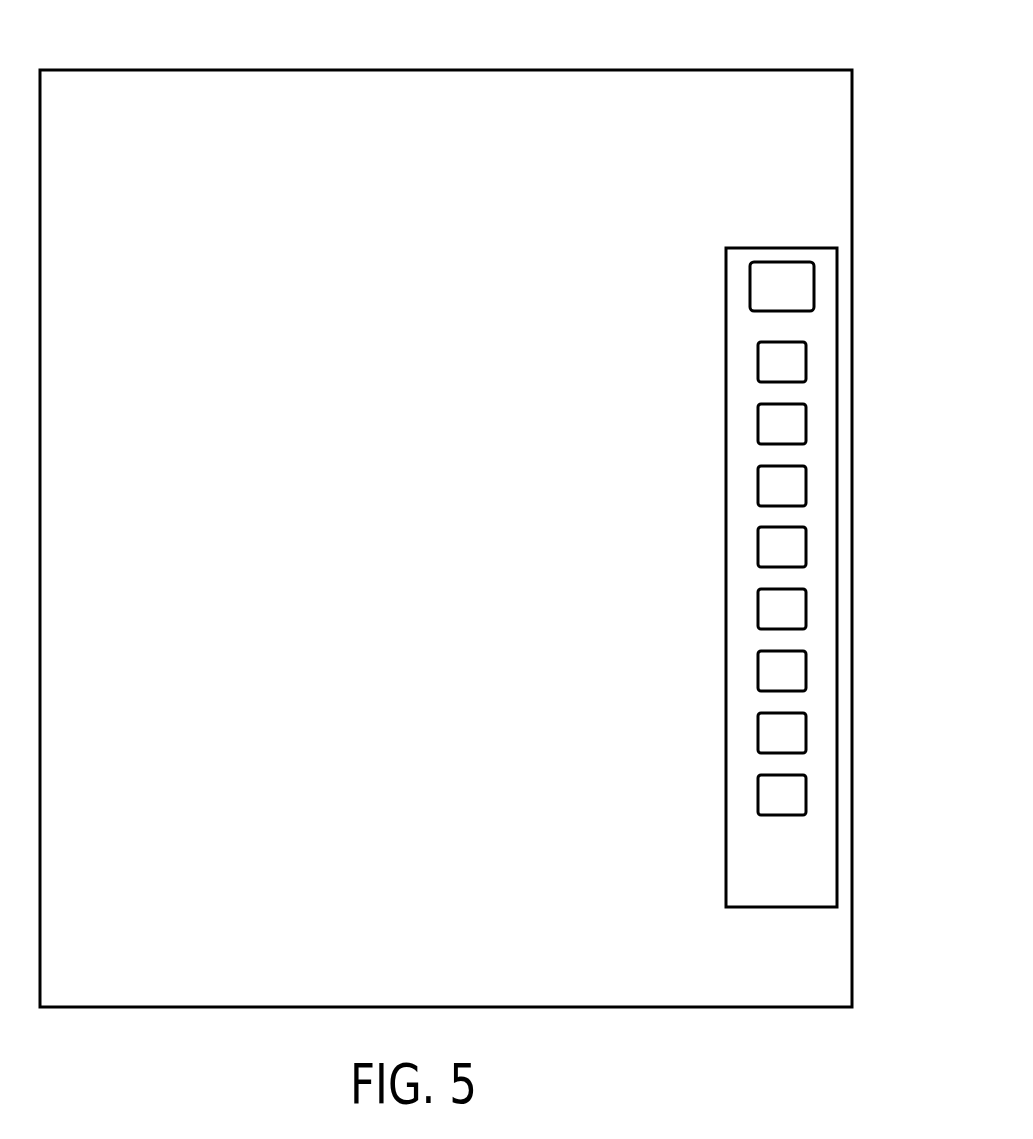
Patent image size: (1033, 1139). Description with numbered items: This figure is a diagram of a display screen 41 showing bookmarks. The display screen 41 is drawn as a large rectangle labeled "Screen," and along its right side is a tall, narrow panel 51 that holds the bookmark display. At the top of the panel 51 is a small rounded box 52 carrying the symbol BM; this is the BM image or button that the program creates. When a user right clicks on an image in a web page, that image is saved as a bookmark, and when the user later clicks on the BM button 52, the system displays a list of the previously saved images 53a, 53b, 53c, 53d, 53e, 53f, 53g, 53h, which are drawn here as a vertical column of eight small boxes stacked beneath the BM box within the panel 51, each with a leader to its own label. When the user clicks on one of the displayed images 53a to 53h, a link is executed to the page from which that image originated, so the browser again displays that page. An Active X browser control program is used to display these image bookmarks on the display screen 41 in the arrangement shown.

The display screen 41 is at (676, 70).
The menu panel 51 is at (782, 247).
The BM (bookmark) button 52 is at (814, 287).
The previously saved image 53a is at (806, 362).
The previously saved image 53b is at (806, 424).
The previously saved image 53c is at (806, 486).
The previously saved image 53d is at (806, 547).
The previously saved image 53e is at (806, 609).
The previously saved image 53f is at (806, 671).
The previously saved image 53g is at (806, 733).
The previously saved image 53h is at (806, 795).